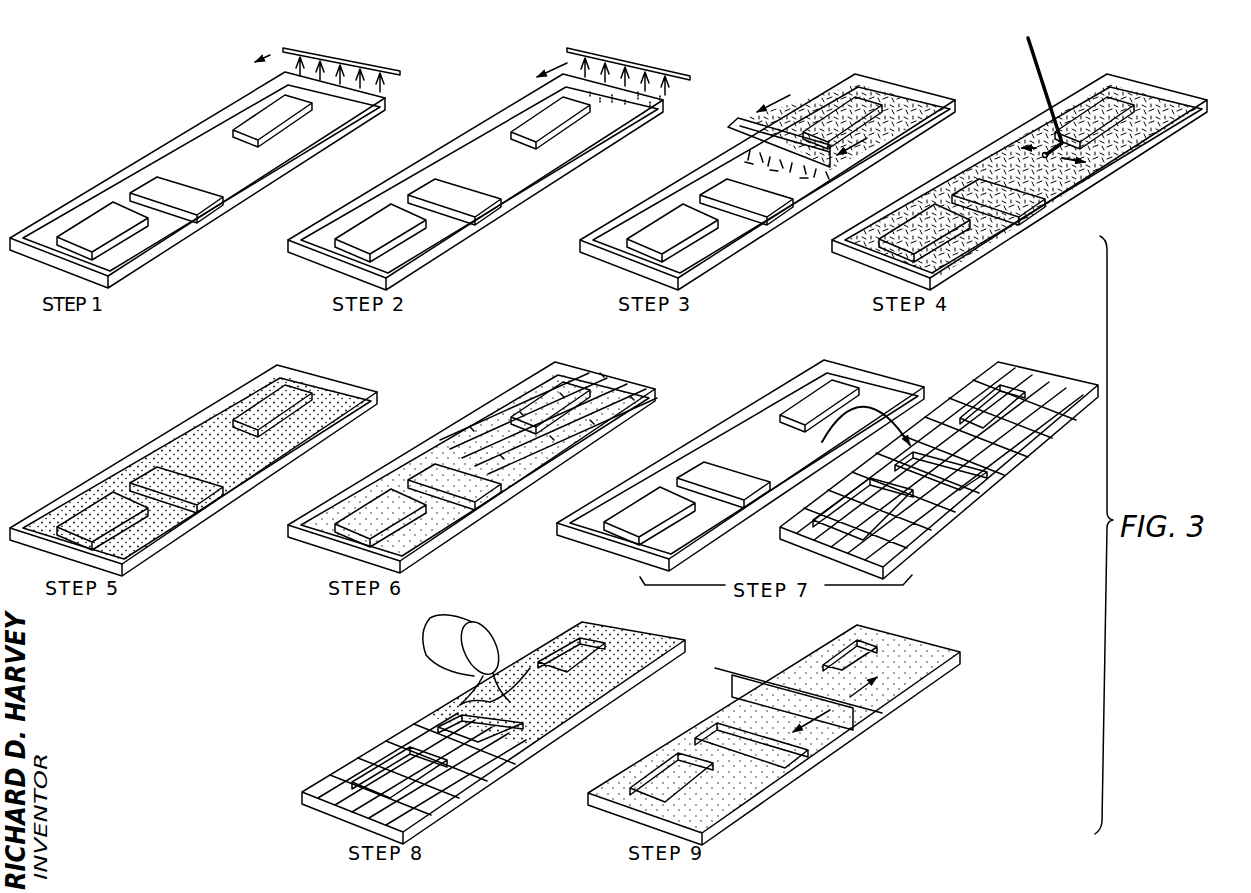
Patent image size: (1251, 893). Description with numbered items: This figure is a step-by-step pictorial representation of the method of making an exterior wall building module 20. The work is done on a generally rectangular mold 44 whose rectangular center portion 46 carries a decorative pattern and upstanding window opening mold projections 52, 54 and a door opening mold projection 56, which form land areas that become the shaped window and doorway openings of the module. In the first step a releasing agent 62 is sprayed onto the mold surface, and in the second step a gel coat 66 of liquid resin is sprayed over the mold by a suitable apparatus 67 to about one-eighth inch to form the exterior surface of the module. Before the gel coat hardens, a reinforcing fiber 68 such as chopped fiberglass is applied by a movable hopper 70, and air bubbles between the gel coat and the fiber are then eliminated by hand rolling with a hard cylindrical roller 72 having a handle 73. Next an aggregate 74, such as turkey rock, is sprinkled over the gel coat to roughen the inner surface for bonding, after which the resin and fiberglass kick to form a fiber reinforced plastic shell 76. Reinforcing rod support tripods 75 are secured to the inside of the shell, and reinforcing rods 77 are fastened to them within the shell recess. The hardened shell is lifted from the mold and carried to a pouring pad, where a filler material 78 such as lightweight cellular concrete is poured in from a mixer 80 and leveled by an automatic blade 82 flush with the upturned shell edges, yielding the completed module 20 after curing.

The module 20 is at (643, 750).
The mold 44 is at (163, 148).
The rectangular center portion 46 is at (205, 158).
The window opening mold projection 52 is at (102, 233).
The window opening mold projection 54 is at (262, 118).
The door opening mold projection 56 is at (157, 197).
The releasing agent 62 is at (377, 78).
The gel coat 66 is at (667, 88).
The spraying apparatus 67 is at (643, 63).
The reinforcing fiber 68 is at (910, 108).
The movable hopper 70 is at (733, 137).
The cylindrical roller 72 is at (1057, 145).
The handle 73 is at (1047, 80).
The aggregate 74 is at (190, 450).
The reinforcing rod support tripods 75 is at (583, 400).
The fiber reinforced plastic shell 76 is at (218, 427).
The reinforcing rods 77 is at (462, 445).
The filler material 78 is at (498, 667).
The mixer 80 is at (450, 655).
The automatic blade 82 is at (743, 680).